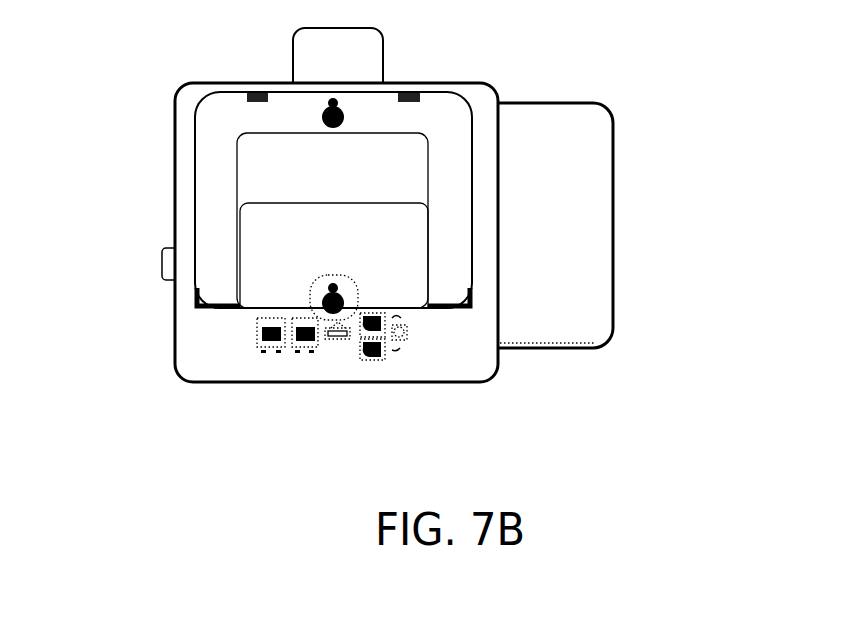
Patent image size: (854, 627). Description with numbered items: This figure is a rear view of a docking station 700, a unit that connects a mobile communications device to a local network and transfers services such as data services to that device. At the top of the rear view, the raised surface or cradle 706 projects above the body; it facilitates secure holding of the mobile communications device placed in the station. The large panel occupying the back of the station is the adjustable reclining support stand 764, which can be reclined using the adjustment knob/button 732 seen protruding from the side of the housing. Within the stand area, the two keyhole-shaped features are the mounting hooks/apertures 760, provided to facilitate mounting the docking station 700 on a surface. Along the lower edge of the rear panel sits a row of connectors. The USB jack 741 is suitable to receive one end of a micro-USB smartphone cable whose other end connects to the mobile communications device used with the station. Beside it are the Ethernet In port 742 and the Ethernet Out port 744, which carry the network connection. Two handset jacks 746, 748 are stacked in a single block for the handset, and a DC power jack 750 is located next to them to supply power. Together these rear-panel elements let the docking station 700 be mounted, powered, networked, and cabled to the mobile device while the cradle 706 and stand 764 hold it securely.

The docking station 700 is at (123, 58).
The raised surface or cradle 706 is at (373, 57).
The adjustable reclining support stand 764 is at (213, 130).
The adjustment knob/button 732 is at (167, 280).
The mounting hooks/apertures 760 is at (347, 275).
The handset jack 748 is at (383, 315).
The DC power jack 750 is at (408, 330).
The handset jack 746 is at (524, 342).
The USB jack 741 is at (327, 340).
The Ethernet In port 742 is at (307, 352).
The Ethernet Out port 744 is at (273, 352).